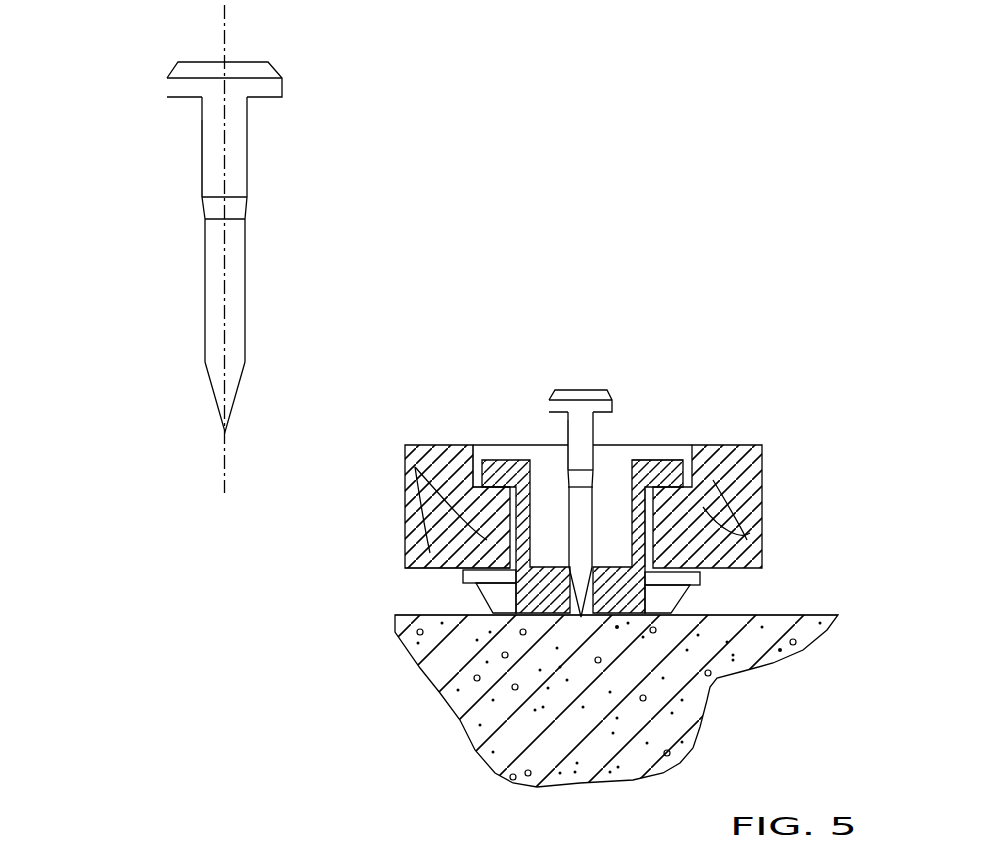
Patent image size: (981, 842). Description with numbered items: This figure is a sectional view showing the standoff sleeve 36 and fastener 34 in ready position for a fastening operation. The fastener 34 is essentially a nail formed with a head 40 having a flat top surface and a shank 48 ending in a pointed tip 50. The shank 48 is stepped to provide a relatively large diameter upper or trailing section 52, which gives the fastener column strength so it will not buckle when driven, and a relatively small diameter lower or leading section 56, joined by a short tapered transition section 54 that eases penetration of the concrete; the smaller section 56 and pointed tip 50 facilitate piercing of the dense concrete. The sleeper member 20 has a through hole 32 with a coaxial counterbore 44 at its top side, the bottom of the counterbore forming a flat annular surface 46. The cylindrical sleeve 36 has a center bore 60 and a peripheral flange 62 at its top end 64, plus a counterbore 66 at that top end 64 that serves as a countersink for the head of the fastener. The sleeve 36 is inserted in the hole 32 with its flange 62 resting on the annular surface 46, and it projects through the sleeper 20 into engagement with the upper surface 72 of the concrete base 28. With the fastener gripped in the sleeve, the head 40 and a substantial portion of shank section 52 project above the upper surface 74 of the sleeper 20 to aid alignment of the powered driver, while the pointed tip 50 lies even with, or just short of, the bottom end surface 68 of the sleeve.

The sleeper member 20 is at (763, 486).
The concrete base 28 is at (700, 740).
The through hole 32 is at (518, 552).
The fastener 34 is at (603, 497).
The standoff sleeve 36 is at (637, 537).
The head 40 is at (176, 71).
The counterbore 44 is at (684, 463).
The flat annular surface 46 is at (462, 474).
The shank 48 is at (247, 171).
The pointed tip 50 is at (226, 432).
The upper or trailing shank section 52 is at (201, 158).
The tapered transition section 54 is at (247, 210).
The lower or leading shank section 56 is at (205, 292).
The center bore 60 is at (580, 571).
The peripheral flange 62 is at (475, 488).
The top end 64 is at (453, 838).
The counterbore 66 is at (182, 840).
The bottom end surface 68 is at (543, 615).
The upper surface 72 is at (753, 615).
The upper surface 74 is at (720, 447).